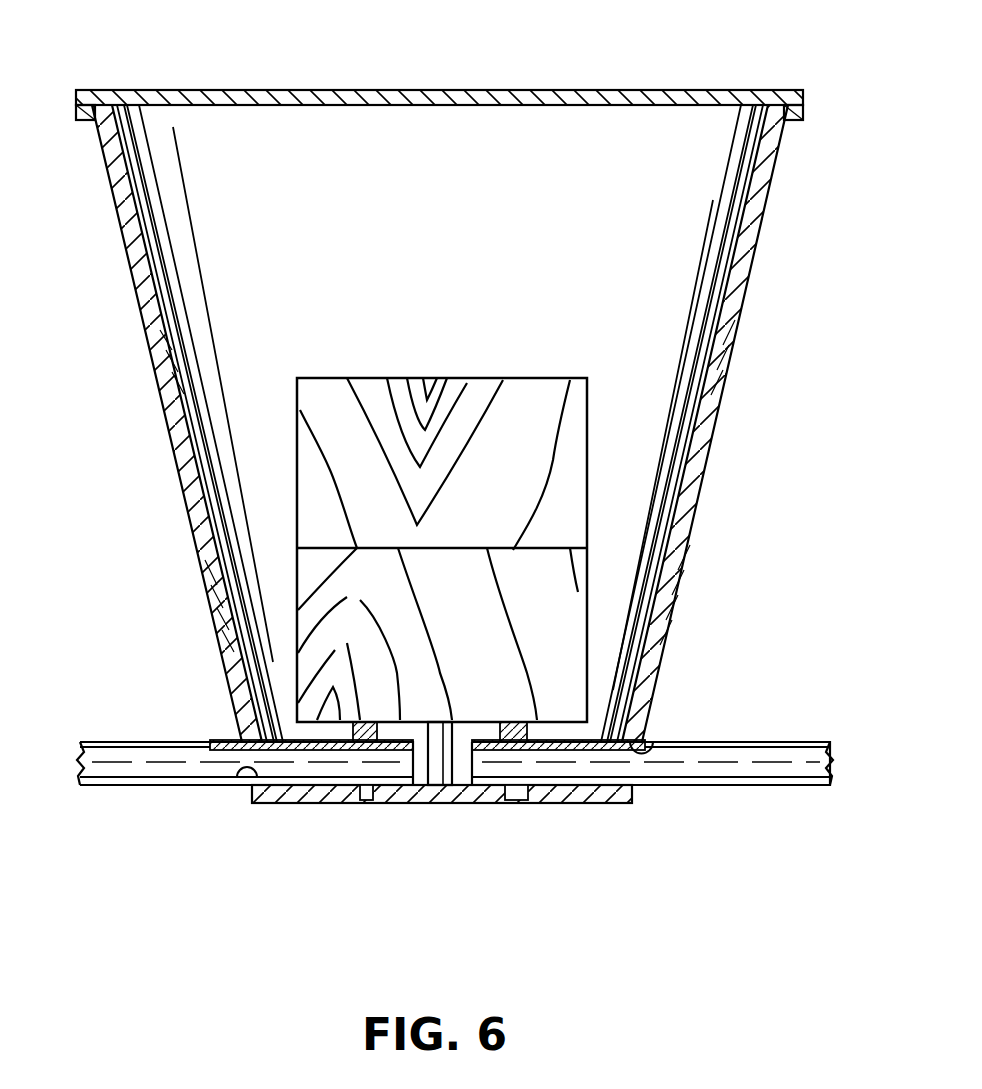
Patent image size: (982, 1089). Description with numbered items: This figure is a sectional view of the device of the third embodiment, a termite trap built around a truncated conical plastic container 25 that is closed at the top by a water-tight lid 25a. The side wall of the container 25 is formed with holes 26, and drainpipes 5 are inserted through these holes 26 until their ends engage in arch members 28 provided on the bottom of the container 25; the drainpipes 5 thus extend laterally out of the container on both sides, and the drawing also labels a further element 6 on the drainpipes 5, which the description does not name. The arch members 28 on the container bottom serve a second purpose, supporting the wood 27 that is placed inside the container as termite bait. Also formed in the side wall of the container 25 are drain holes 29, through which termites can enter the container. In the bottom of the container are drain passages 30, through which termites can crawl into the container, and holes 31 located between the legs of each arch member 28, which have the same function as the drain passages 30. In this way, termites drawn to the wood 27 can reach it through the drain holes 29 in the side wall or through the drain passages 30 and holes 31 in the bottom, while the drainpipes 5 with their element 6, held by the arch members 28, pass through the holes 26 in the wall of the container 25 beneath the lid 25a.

The water-tight lid 25a is at (463, 92).
The container 25 is at (755, 238).
The drain holes 29 is at (158, 362).
The wood 27 is at (573, 593).
The drainpipes 5 is at (175, 745).
The surface layer of base plate 6 is at (125, 745).
The holes 26 is at (232, 776).
The arch members 28 is at (345, 735).
The drain passages 30 is at (442, 787).
The holes 31 is at (365, 803).